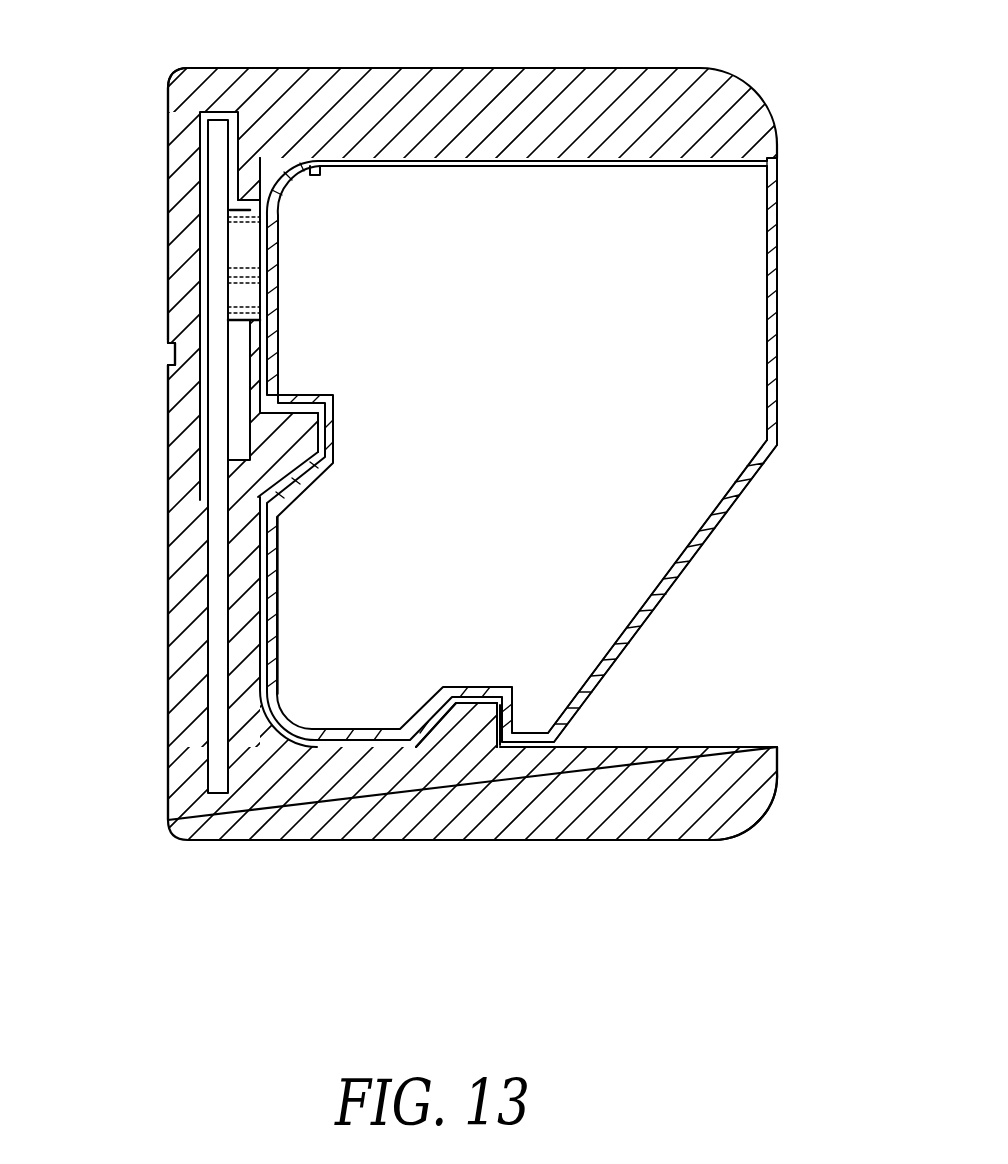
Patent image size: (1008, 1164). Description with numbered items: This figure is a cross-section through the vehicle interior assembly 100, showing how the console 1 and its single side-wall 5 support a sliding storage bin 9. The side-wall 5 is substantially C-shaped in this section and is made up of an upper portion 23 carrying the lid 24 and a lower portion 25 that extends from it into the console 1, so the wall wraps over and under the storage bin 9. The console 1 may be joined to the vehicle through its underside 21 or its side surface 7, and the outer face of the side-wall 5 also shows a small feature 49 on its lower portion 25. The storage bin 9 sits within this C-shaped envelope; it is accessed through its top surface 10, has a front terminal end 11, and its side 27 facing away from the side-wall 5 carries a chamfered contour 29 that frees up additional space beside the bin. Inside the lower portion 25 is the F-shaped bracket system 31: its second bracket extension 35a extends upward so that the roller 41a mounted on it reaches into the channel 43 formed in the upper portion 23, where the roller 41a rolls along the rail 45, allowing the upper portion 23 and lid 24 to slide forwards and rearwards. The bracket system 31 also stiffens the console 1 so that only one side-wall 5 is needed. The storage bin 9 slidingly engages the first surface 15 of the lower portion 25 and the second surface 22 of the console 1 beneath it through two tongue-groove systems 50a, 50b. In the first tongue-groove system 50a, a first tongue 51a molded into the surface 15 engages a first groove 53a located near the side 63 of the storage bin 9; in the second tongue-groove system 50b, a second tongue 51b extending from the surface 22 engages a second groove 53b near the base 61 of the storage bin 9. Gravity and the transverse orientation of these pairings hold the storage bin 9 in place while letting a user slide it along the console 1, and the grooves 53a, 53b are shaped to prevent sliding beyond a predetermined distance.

The vehicle interior assembly 100 is at (116, 961).
The console 1 is at (722, 775).
The side-wall 5 is at (190, 790).
The side surface 7 is at (167, 625).
The storage bin 9 is at (665, 275).
The top surface 10 is at (718, 163).
The front terminal end 11 is at (357, 250).
The first surface 15 is at (260, 550).
The underside 21 is at (258, 840).
The second surface 22 is at (717, 745).
The upper portion 23 is at (168, 92).
The lid 24 is at (470, 67).
The lower portion 25 is at (195, 584).
The side 27 is at (777, 342).
The chamfered contour 29 is at (725, 521).
The bracket system 31 is at (232, 312).
The second bracket extension 35a is at (217, 137).
The roller 41a is at (242, 278).
The channel 43 is at (243, 210).
The rail 45 is at (260, 190).
The notch 49 is at (172, 347).
The tongue-groove system 50a is at (260, 430).
The first tongue 51a is at (303, 427).
The first groove 53a is at (260, 494).
The tongue-groove system 50b is at (455, 706).
The second tongue 51b is at (468, 722).
The second groove 53b is at (494, 748).
The base 61 is at (540, 728).
The side 63 is at (270, 625).